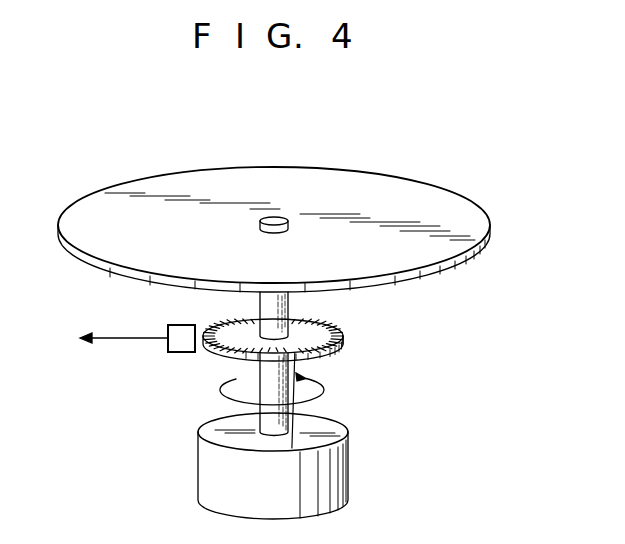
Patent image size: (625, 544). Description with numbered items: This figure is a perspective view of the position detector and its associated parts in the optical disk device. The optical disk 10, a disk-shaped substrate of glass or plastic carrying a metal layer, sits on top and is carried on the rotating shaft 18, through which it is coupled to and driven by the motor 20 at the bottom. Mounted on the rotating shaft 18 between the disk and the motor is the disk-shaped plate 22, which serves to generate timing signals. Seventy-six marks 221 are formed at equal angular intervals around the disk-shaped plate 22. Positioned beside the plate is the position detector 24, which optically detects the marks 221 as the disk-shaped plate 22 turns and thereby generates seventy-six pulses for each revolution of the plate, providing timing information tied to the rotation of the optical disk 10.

The optical disk 10 is at (274, 229).
The rotating shaft 18 is at (288, 406).
The motor 20 is at (349, 474).
The disk-shaped plate 22 is at (312, 322).
The marks 221 is at (343, 343).
The position detector 24 is at (178, 353).